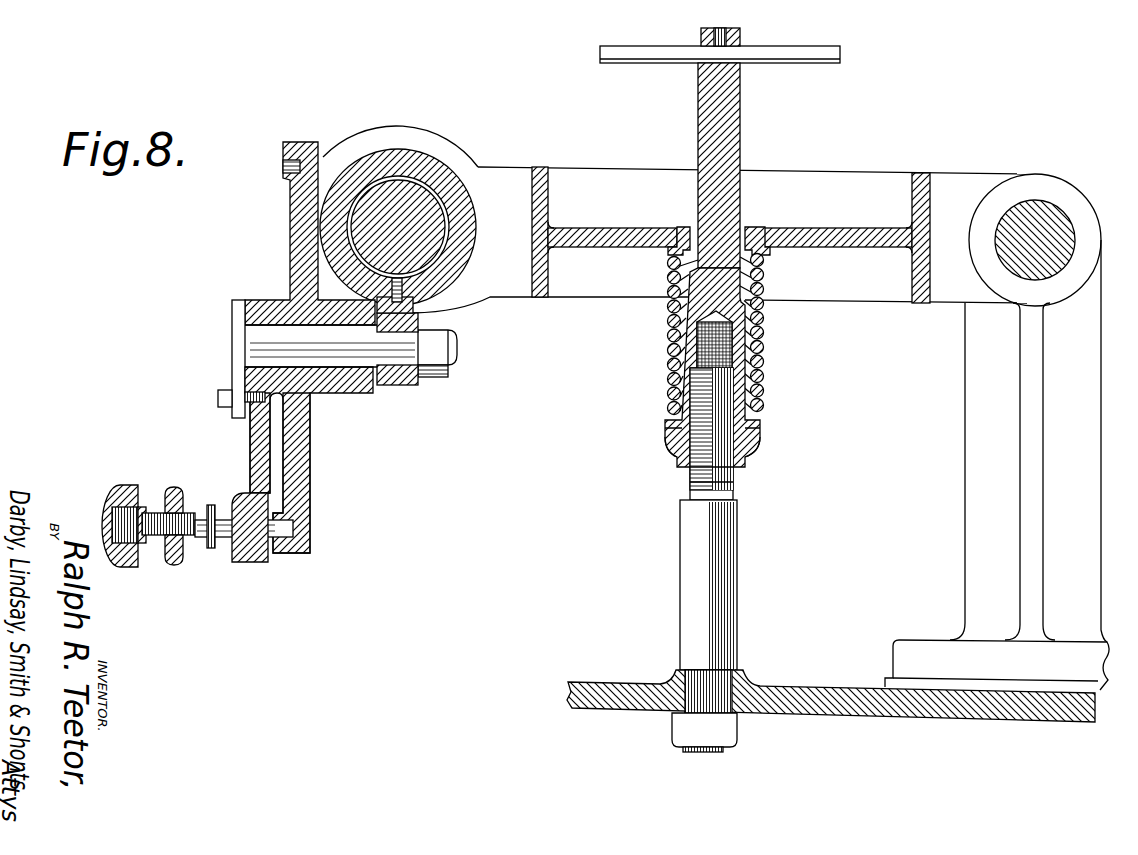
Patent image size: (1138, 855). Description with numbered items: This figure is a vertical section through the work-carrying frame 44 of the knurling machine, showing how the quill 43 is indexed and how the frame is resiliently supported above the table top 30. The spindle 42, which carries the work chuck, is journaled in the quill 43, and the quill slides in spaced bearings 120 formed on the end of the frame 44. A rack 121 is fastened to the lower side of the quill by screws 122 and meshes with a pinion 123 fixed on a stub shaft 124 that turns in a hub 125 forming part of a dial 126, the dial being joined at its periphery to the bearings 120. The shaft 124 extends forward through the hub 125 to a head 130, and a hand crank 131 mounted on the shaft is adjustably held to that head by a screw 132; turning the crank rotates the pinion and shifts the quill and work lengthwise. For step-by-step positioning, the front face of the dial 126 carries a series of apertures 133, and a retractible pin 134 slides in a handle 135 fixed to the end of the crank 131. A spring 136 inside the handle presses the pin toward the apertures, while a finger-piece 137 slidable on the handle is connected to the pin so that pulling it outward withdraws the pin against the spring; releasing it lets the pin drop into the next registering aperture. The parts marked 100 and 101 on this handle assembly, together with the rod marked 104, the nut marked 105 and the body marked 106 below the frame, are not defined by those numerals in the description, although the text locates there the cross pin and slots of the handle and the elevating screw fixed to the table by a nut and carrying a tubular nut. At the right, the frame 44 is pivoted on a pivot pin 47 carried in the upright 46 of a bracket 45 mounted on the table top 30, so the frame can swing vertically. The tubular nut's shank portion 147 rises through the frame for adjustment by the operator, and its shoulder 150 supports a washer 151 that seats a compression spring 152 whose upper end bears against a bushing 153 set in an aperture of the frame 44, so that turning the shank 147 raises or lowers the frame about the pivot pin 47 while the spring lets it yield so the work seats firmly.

The table top 30 is at (573, 702).
The spindle 42 is at (400, 185).
The quill 43 is at (422, 178).
The frame 44 is at (875, 290).
The bracket 45 is at (918, 652).
The upright 46 is at (970, 470).
The pivot pin 47 is at (1040, 222).
The washer 100 is at (214, 548).
The bolt 101 is at (210, 520).
The rod 104 is at (720, 557).
The nut 105 is at (738, 736).
The sleeve body 106 is at (750, 462).
The bearings 120 is at (353, 136).
The rack 121 is at (414, 305).
The screws 122 is at (405, 292).
The pinion 123 is at (402, 385).
The stub shaft 124 is at (362, 362).
The hub 125 is at (342, 388).
The dial 126 is at (300, 490).
The head 130 is at (240, 305).
The hand crank 131 is at (258, 435).
The screw 132 is at (226, 392).
The apertures 133 is at (283, 170).
The retractible pin 134 is at (262, 548).
The handle 135 is at (132, 545).
The spring 136 is at (162, 545).
The finger-piece 137 is at (176, 552).
The shank portion 147 is at (742, 112).
The shoulder 150 is at (760, 445).
The washer 151 is at (762, 425).
The compression spring 152 is at (764, 318).
The bushing 153 is at (755, 226).